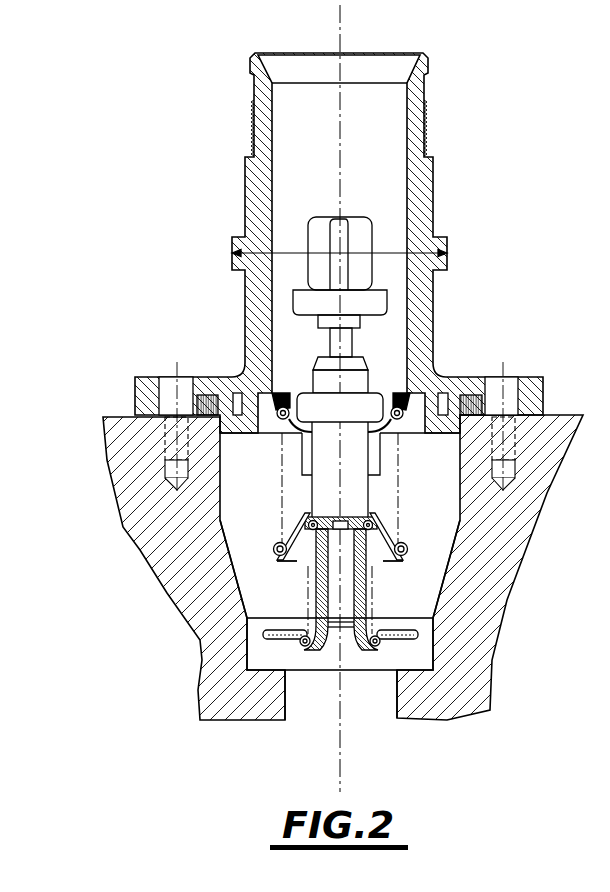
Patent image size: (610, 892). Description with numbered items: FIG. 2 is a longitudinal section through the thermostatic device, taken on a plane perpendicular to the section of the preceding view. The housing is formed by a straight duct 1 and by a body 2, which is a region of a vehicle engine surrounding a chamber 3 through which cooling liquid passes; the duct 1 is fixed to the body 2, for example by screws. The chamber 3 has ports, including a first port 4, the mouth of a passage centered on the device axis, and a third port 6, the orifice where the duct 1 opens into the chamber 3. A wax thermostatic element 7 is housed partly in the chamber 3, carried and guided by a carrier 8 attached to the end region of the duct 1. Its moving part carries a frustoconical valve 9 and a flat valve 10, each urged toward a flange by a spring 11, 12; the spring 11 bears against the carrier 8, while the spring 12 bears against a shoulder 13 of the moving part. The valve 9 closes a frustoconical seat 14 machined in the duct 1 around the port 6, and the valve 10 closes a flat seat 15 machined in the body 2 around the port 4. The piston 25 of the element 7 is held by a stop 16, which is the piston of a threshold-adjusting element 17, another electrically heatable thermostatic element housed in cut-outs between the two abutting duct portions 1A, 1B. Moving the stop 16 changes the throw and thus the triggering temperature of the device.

The duct 1 is at (410, 95).
The duct portion 1A is at (258, 190).
The duct portion 1B is at (258, 345).
The body 2 is at (490, 592).
The chamber 3 is at (340, 569).
The first port 4 is at (341, 695).
The third port 6 is at (328, 320).
The thermostatic element 7 is at (357, 485).
The carrier 8 is at (410, 528).
The valve 9 is at (290, 413).
The valve 10 is at (400, 635).
The spring 11 is at (280, 503).
The spring 12 is at (310, 580).
The shoulder 13 is at (395, 513).
The seat 14 is at (400, 380).
The seat 15 is at (262, 665).
The stop 16 is at (300, 397).
The threshold-adjusting element 17 is at (358, 228).
The piston 25 is at (348, 342).